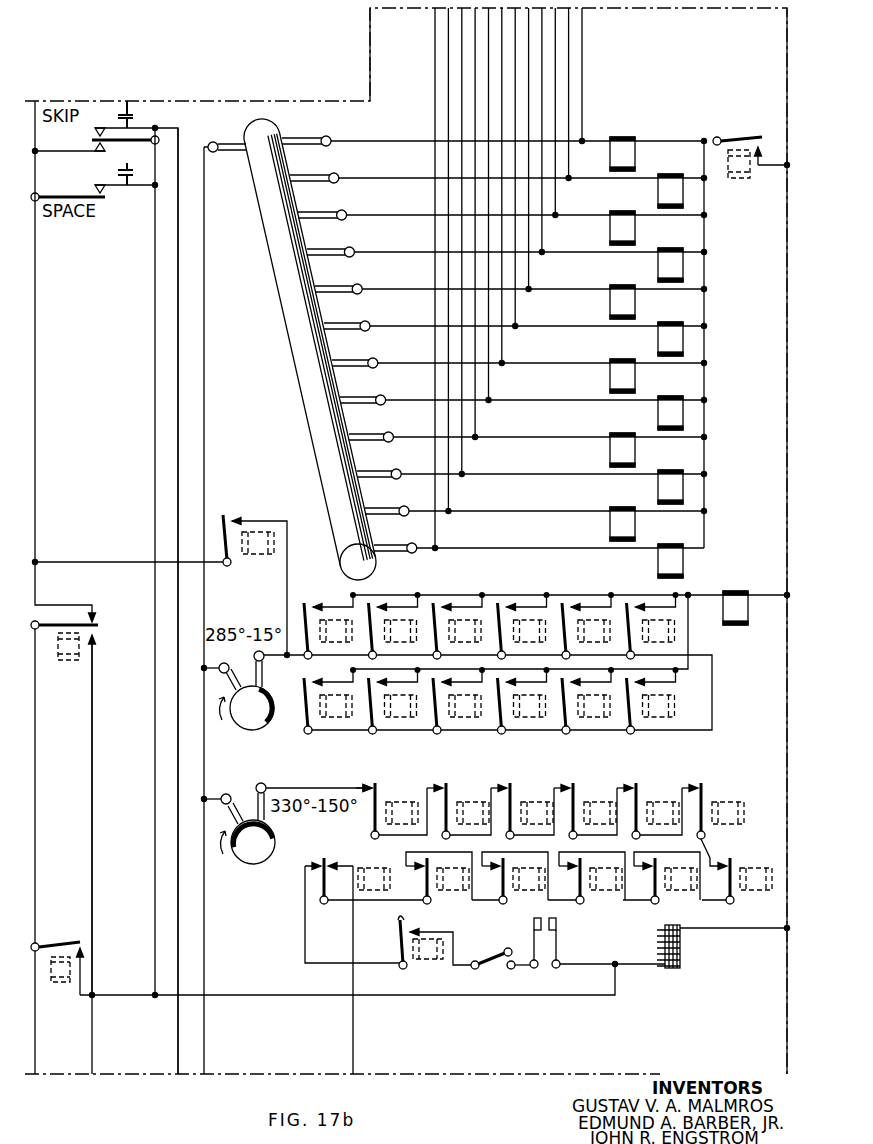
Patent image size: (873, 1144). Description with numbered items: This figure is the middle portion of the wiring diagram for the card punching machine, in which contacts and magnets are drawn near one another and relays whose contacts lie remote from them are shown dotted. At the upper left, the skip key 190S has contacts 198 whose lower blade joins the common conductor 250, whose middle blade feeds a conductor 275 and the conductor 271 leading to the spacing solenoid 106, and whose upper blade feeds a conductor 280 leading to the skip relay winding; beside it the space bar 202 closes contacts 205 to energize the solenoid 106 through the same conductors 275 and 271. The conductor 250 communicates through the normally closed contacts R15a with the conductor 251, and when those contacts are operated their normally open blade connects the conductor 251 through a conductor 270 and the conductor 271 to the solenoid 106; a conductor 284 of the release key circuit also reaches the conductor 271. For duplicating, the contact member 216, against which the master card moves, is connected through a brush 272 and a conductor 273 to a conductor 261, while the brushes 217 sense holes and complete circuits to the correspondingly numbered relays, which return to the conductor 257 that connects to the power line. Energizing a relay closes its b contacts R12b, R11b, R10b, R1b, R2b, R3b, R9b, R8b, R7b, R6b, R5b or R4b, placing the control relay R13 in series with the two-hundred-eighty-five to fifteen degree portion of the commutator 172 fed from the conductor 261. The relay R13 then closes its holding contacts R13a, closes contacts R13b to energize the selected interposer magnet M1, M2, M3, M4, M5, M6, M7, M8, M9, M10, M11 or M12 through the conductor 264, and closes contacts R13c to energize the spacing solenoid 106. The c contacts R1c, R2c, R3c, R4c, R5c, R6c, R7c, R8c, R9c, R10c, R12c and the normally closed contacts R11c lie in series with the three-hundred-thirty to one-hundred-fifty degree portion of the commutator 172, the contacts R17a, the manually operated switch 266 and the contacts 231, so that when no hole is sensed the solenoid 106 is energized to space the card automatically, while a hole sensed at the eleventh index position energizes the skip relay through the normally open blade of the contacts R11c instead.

The skip key 190S is at (130, 112).
The contacts 198 is at (92, 140).
The bar 202 is at (129, 166).
The contacts 205 is at (94, 194).
The common conductor 250 is at (36, 407).
The conductor 251 is at (36, 818).
The conductor 270 is at (93, 842).
The conductor 284 is at (92, 1047).
The conductor 275 is at (155, 398).
The conductor 280 is at (180, 398).
The conductor 273 is at (204, 497).
The conductor 261 is at (205, 1047).
The conductor 271 is at (470, 996).
The brush 272 is at (237, 151).
The contact member 216 is at (294, 337).
The brushes 217 is at (351, 360).
The conductor 264 is at (490, 52).
The conductor 257 is at (785, 438).
The interposer magnet M12 is at (636, 157).
The interposer magnet M11 is at (657, 193).
The interposer magnet M10 is at (636, 231).
The interposer magnet M1 is at (657, 267).
The interposer magnet M2 is at (636, 305).
The interposer magnet M3 is at (657, 341).
The interposer magnet M4 is at (636, 379).
The interposer magnet M5 is at (657, 415).
The interposer magnet M6 is at (636, 453).
The interposer magnet M7 is at (657, 489).
The interposer magnet M8 is at (636, 527).
The interposer magnet M9 is at (683, 566).
The control relay R13 is at (748, 183).
The contacts R13a is at (266, 507).
The contacts R13b is at (764, 138).
The contacts R13c is at (84, 943).
The contacts R15a is at (102, 620).
The contacts R17a is at (413, 942).
The commutator 172 is at (244, 730).
The contacts R12b is at (306, 602).
The contacts R11b is at (371, 603).
The contacts R10b is at (436, 603).
The contacts R1b is at (502, 603).
The contacts R2b is at (565, 603).
The contacts R3b is at (628, 603).
The contacts R9b is at (305, 686).
The contacts R8b is at (382, 697).
The contacts R7b is at (449, 697).
The contacts R6b is at (513, 697).
The contacts R5b is at (578, 697).
The contacts R4b is at (640, 697).
The contacts R1c is at (374, 784).
The contacts R2c is at (446, 784).
The contacts R3c is at (510, 784).
The contacts R4c is at (573, 784).
The contacts R5c is at (636, 784).
The contacts R6c is at (701, 784).
The contacts R7c is at (727, 875).
The contacts R8c is at (652, 875).
The contacts R9c is at (572, 875).
The contacts R10c is at (498, 875).
The contacts R11c is at (326, 859).
The contacts R12c is at (423, 872).
The manually operated switch 266 is at (495, 960).
The contacts 231 is at (557, 935).
The spacing solenoid 106 is at (683, 964).